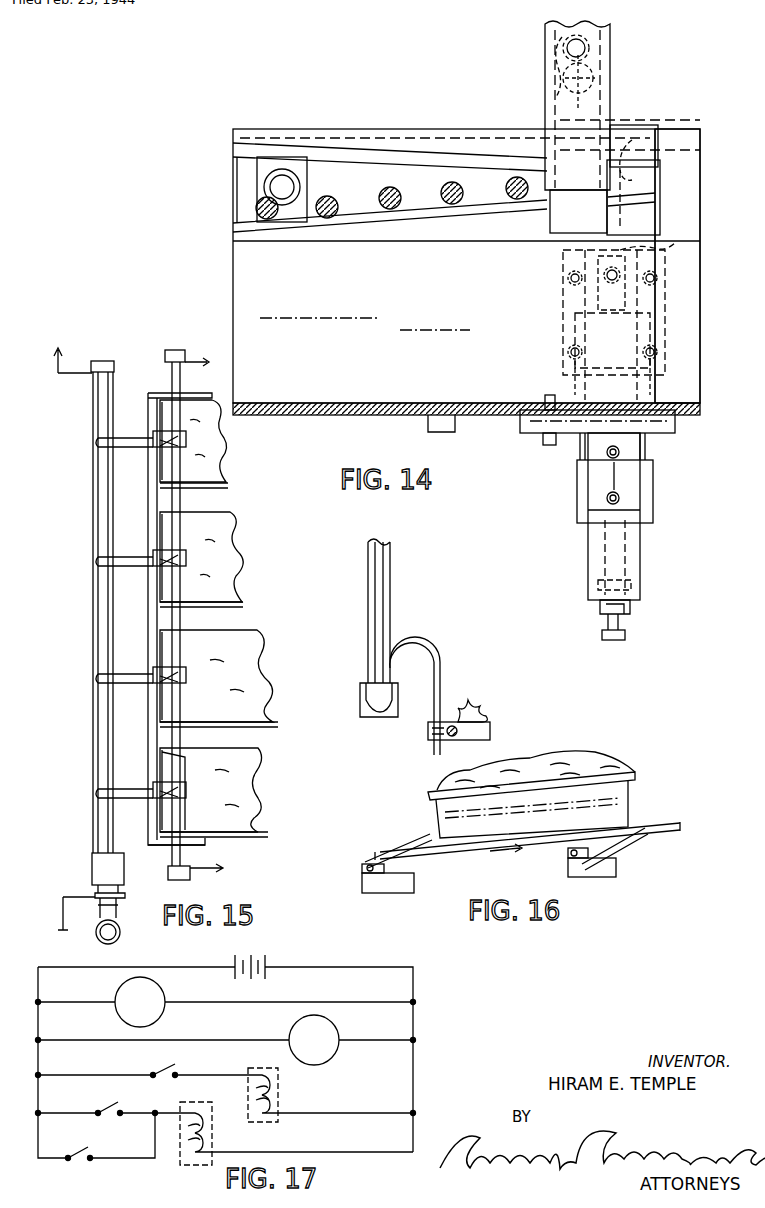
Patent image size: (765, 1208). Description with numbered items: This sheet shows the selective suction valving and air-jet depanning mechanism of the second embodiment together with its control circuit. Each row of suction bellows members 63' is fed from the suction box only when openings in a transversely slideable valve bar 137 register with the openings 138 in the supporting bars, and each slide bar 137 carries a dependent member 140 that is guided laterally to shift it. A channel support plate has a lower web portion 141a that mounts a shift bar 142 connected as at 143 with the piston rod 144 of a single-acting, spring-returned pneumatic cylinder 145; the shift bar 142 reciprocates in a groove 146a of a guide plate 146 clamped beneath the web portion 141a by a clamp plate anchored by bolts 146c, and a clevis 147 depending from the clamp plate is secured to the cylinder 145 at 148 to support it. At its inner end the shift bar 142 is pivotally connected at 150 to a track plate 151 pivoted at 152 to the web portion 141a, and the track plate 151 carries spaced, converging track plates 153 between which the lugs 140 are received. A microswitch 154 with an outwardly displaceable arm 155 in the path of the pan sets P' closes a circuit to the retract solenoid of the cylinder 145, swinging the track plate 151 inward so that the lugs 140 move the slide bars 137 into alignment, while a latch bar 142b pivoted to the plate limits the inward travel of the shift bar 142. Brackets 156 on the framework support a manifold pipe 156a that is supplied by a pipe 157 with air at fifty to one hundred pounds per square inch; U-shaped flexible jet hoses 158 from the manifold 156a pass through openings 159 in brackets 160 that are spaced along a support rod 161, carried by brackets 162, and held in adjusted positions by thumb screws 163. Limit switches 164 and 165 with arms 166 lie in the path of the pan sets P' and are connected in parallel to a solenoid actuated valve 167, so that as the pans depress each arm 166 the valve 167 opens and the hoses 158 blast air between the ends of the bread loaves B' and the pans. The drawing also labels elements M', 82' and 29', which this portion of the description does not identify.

In FIG. 14, the bellows member 63' is at (605, 64).
In FIG. 14, the slide bar 137 is at (593, 75).
In FIG. 14, the openings 138 is at (552, 58).
In FIG. 14, the dependent member 140 is at (335, 212).
In FIG. 14, the lower web portion 141a is at (640, 220).
In FIG. 14, the shift bar 142 is at (660, 200).
In FIG. 14, the latch bar 142b is at (530, 420).
In FIG. 14, the connection 143 is at (632, 610).
In FIG. 14, the piston rod 144 is at (625, 552).
In FIG. 14, the pneumatic cylinder 145 is at (653, 468).
In FIG. 17, the pneumatic cylinder 145 is at (278, 1082).
In FIG. 14, the guide plate 146 is at (665, 310).
In FIG. 14, the groove 146a is at (645, 378).
In FIG. 14, the bolts 146c is at (660, 268).
In FIG. 14, the clevis 147 is at (676, 242).
In FIG. 14, the securing point 148 is at (563, 262).
In FIG. 14, the pivotal connection 150 is at (630, 140).
In FIG. 14, the track plate 151 is at (480, 232).
In FIG. 14, the pivot 152 is at (283, 187).
In FIG. 14, the track plates 153 is at (374, 154).
In FIG. 17, the microswitch 154 is at (170, 1066).
In FIG. 15, the arm 155 is at (64, 352).
In FIG. 15, the brackets 156 is at (63, 912).
In FIG. 15, the manifold pipe 156a is at (95, 425).
In FIG. 15, the pipe 157 is at (98, 935).
In FIG. 16, the pipe 157 is at (390, 560).
In FIG. 15, the jet hoses 158 is at (128, 778).
In FIG. 16, the jet hoses 158 is at (420, 632).
In FIG. 16, the openings 159 is at (428, 722).
In FIG. 15, the brackets 160 is at (248, 640).
In FIG. 15, the support rod 161 is at (196, 856).
In FIG. 16, the support rod 161 is at (490, 731).
In FIG. 15, the brackets 162 is at (204, 876).
In FIG. 16, the brackets 162 is at (478, 706).
In FIG. 15, the thumb screws 163 is at (195, 770).
In FIG. 16, the limit switch 164 is at (362, 884).
In FIG. 17, the limit switch 164 is at (112, 1104).
In FIG. 16, the limit switch 165 is at (616, 868).
In FIG. 17, the limit switch 165 is at (82, 1150).
In FIG. 16, the arms 166 is at (656, 852).
In FIG. 15, the solenoid actuated valve 167 is at (92, 866).
In FIG. 17, the solenoid actuated valve 167 is at (212, 1130).
In FIG. 15, the pan set P' is at (187, 579).
In FIG. 16, the pan set P' is at (555, 791).
In FIG. 16, the bread loaves B' is at (554, 753).
In FIG. 16, the conveyor rail 29' is at (545, 820).
In FIG. 17, the motor M' is at (225, 1002).
In FIG. 17, the lamp 82' is at (225, 1040).